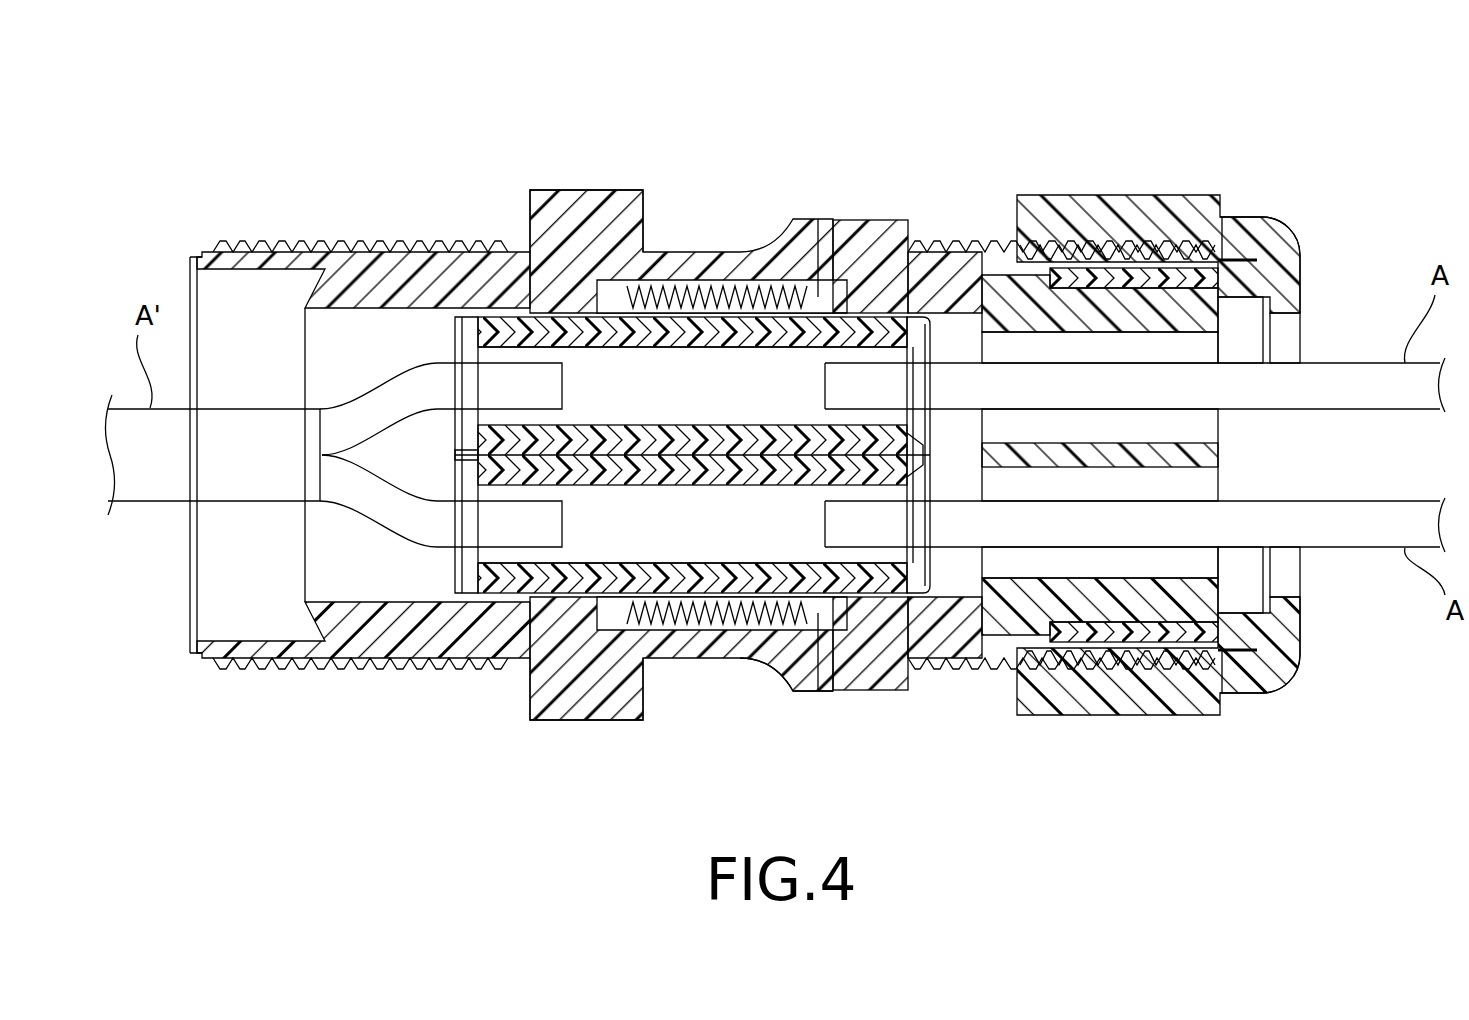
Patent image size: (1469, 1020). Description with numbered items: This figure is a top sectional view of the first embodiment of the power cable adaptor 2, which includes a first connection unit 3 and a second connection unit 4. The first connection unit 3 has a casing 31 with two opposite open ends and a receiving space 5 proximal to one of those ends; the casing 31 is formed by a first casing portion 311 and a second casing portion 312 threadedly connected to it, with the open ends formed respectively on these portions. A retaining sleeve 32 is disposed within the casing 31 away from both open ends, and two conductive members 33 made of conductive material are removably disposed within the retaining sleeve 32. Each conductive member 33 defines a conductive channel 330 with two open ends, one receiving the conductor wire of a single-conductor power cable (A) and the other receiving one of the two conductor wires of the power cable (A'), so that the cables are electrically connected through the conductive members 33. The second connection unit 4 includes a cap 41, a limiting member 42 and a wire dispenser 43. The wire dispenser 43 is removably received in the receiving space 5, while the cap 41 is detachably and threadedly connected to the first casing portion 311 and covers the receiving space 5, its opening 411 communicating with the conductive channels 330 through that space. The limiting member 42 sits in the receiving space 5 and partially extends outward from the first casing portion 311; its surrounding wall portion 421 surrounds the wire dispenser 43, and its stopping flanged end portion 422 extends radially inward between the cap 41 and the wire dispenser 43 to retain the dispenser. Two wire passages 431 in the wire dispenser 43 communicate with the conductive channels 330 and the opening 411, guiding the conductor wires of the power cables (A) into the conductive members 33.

The power cable adaptor 2 is at (862, 421).
The first connection unit 3 is at (360, 215).
The casing 31 is at (862, 432).
The first casing portion 311 is at (875, 668).
The second casing portion 312 is at (565, 208).
The retaining sleeve 32 is at (880, 318).
The conductive member 33 is at (517, 337).
The conductive channel 330 is at (503, 355).
The second connection unit 4 is at (1165, 390).
The cap 41 is at (1112, 205).
The opening 411 is at (1283, 600).
The limiting member 42 is at (1262, 272).
The surrounding wall portion 421 is at (1060, 262).
The stopping flanged end portion 422 is at (1240, 258).
The wire dispenser 43 is at (993, 260).
The wire passage 431 is at (1203, 352).
The receiving space 5 is at (970, 637).